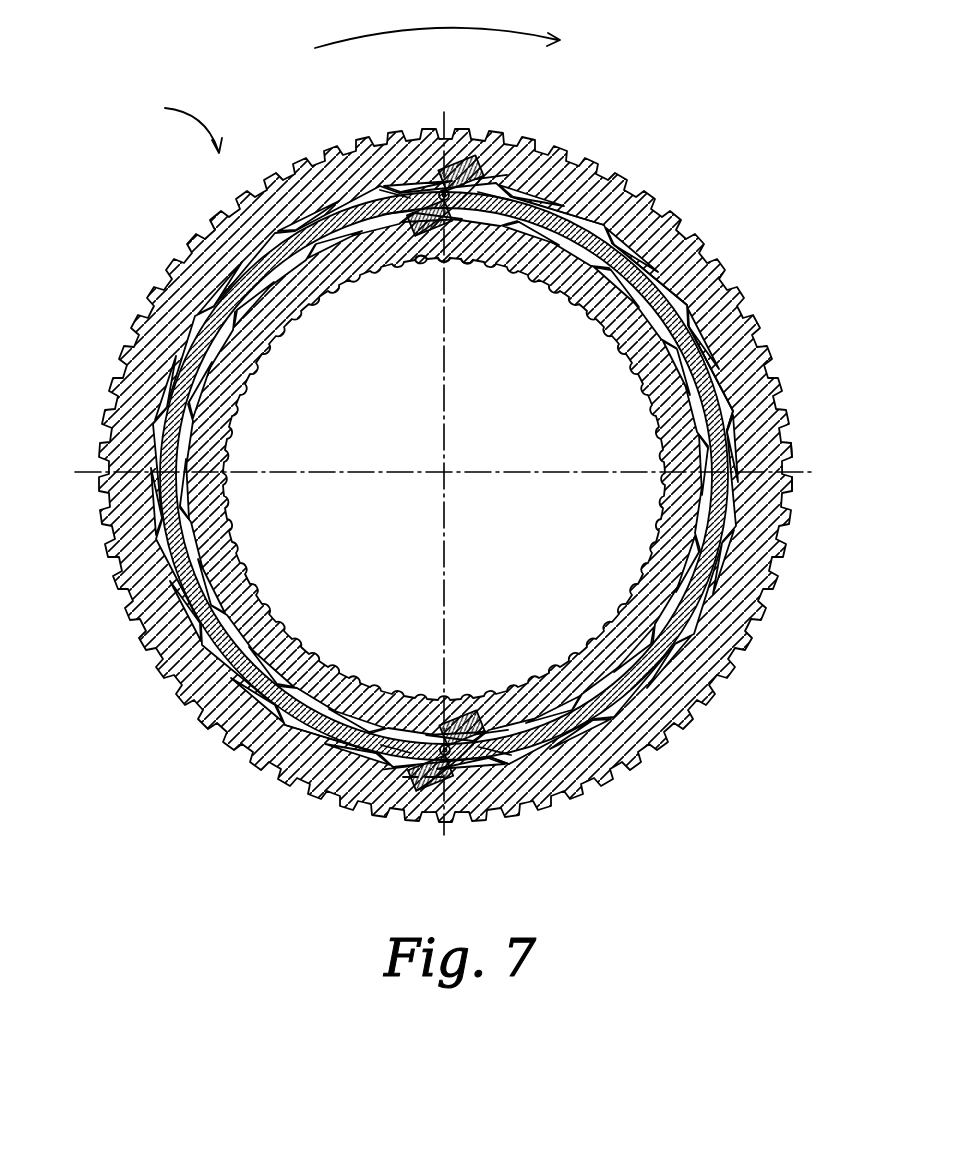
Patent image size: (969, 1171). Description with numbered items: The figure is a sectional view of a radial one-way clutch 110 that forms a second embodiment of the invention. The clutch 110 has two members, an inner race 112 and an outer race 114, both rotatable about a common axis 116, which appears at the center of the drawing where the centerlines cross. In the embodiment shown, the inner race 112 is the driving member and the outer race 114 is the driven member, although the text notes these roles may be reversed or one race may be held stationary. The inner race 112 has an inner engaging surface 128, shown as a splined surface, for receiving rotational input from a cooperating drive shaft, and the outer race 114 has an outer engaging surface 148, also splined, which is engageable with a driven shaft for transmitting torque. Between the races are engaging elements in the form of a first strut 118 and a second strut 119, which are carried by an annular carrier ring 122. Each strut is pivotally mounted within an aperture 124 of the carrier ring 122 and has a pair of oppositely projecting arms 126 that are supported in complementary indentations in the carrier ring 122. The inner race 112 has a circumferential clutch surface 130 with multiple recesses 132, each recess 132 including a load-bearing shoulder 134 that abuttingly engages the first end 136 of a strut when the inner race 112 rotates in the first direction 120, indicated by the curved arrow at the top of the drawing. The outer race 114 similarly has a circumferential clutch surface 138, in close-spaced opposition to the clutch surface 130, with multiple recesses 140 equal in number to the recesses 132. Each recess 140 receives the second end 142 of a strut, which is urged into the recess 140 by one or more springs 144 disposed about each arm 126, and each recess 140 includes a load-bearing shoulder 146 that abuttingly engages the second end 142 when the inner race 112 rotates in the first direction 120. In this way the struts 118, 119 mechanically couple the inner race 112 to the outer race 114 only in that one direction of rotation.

The clutch 110 is at (168, 125).
The inner race 112 is at (770, 590).
The outer race 114 is at (797, 532).
The common axis 116 is at (440, 468).
The first strut 118 is at (455, 186).
The second strut 119 is at (490, 790).
The first direction 120 is at (460, 43).
The annular carrier ring 122 is at (600, 195).
The aperture 124 is at (513, 783).
The arms 126 is at (465, 803).
The inner engaging surface 128 is at (600, 308).
The circumferential clutch surface 130 is at (185, 692).
The recess 132 is at (348, 800).
The load-bearing shoulder 134 is at (458, 700).
The first end 136 is at (587, 783).
The circumferential clutch surface 138 is at (730, 395).
The recess 140 is at (543, 787).
The second end 142 is at (393, 797).
The spring 144 is at (437, 790).
The load-bearing shoulder 146 is at (745, 322).
The outer engaging surface 148 is at (797, 447).